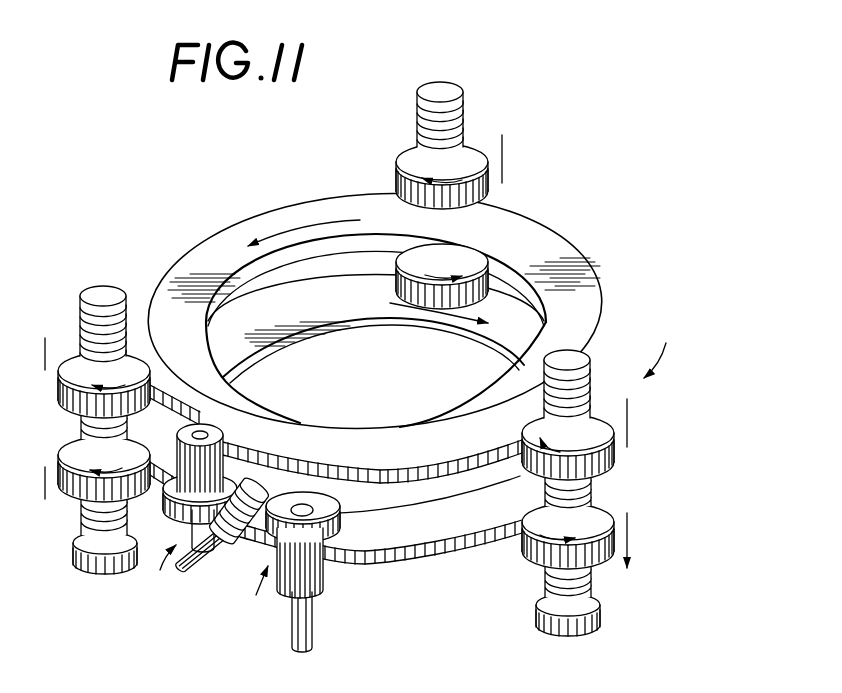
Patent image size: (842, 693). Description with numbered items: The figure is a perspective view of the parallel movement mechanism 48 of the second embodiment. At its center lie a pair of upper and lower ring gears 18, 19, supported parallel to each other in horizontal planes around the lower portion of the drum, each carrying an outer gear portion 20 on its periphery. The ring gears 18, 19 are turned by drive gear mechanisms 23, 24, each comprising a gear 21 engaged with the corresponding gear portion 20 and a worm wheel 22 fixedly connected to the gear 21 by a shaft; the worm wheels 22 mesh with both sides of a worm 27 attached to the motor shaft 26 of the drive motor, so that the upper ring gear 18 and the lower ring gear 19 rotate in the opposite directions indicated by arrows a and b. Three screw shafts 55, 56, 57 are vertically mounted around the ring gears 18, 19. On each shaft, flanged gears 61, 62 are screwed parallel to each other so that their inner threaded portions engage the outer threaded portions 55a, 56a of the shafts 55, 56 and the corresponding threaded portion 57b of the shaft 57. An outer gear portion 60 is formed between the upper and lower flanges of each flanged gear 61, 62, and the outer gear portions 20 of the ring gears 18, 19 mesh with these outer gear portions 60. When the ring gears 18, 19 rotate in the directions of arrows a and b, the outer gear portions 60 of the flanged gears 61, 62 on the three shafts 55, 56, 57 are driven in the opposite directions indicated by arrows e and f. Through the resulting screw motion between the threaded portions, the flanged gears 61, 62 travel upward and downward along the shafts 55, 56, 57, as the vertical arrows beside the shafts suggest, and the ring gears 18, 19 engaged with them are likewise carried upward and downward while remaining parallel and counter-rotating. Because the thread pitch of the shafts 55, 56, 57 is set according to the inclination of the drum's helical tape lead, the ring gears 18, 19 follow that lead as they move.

The upper ring gear 18 is at (555, 243).
The lower ring gear 19 is at (415, 540).
The outer gear portion 20 is at (489, 542).
The gear 21 is at (213, 433).
The worm wheel 22 is at (325, 498).
The drive gear mechanism 23 is at (248, 594).
The drive gear mechanism 24 is at (153, 570).
The motor shaft 26 is at (214, 548).
The worm 27 is at (262, 490).
The parallel movement mechanism 48 is at (659, 348).
The screw shaft 55 is at (565, 352).
The outer threaded portion 55a is at (592, 400).
The screw shaft 56 is at (438, 89).
The outer threaded portion 56a is at (465, 130).
The screw shaft 57 is at (103, 296).
The threaded portion of screw 57 57b is at (128, 328).
The outer gear portion 60 is at (490, 198).
The flanged gear 61 is at (473, 155).
The flanged gear 62 is at (412, 248).
The arrow a is at (300, 227).
The arrow b is at (433, 312).
The arrow e is at (452, 192).
The arrow f is at (412, 283).